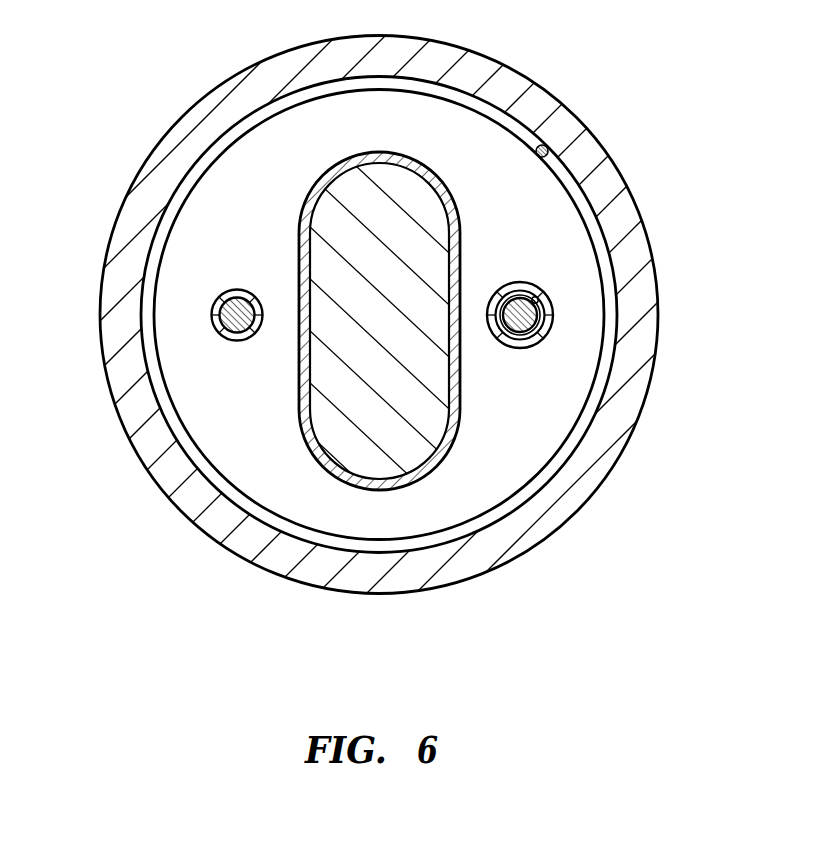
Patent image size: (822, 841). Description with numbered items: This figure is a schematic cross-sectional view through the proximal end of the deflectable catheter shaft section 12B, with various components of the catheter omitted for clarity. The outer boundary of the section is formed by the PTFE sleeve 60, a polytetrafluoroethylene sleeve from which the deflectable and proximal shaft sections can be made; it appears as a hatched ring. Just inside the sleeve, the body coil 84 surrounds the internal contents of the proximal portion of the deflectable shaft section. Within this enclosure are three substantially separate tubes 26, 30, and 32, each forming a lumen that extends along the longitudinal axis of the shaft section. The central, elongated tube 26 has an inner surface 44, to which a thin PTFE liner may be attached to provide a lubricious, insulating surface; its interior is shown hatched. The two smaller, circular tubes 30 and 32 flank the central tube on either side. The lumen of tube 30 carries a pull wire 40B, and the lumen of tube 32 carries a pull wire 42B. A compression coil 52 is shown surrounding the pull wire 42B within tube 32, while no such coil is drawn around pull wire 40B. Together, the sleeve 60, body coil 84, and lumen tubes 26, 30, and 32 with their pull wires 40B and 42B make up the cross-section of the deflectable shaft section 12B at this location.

The deflectable catheter shaft section 12B is at (122, 120).
The PTFE sleeve 60 is at (606, 200).
The body coil 84 is at (550, 158).
The tube 26 is at (410, 483).
The inner surface 44 is at (430, 470).
The tube 30 is at (215, 300).
The pull wire 40B is at (230, 318).
The tube 32 is at (545, 337).
The pull wire 42B is at (537, 316).
The compression coil 52 is at (538, 300).